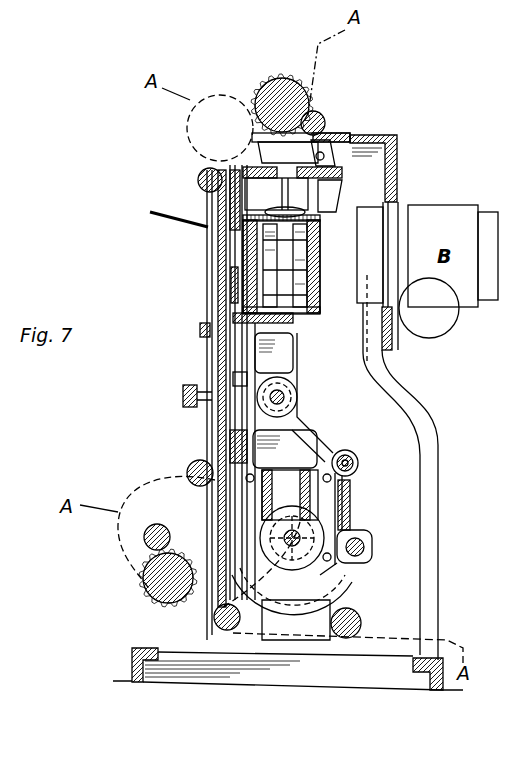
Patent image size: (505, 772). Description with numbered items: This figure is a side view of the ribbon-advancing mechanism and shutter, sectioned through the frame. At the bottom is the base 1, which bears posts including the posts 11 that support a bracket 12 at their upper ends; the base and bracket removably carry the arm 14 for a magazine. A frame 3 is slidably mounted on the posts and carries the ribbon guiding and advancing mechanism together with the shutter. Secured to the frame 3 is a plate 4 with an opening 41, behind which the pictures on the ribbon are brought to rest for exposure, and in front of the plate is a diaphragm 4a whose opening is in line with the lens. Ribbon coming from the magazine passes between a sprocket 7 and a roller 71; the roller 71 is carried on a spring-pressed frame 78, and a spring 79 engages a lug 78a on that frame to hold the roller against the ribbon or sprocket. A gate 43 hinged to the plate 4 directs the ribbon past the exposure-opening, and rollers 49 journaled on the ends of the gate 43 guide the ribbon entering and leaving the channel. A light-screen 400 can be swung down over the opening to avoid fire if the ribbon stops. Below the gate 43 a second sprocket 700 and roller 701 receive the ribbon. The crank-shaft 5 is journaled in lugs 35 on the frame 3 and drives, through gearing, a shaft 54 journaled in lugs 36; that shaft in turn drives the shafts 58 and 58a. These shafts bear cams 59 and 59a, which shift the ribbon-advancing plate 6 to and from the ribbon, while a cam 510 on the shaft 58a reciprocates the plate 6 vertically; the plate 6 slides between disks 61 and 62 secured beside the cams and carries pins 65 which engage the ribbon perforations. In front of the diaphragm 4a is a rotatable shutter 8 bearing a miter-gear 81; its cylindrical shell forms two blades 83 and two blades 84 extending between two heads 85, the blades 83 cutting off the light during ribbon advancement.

The base 1 is at (190, 674).
The frame 3 is at (257, 157).
The plate 4 is at (232, 170).
The diaphragm 4a is at (233, 287).
The crank-shaft 5 is at (372, 550).
The ribbon-advancing plate 6 is at (300, 440).
The sprocket 7 is at (280, 80).
The rotatable shutter 8 is at (388, 355).
The posts 11 is at (440, 612).
The bracket 12 is at (396, 140).
The arm 14 is at (233, 245).
The lugs 35 is at (360, 565).
The lugs 36 is at (350, 457).
The opening 41 is at (227, 277).
The gate 43 is at (205, 340).
The rollers 49 is at (198, 178).
The shaft 54 is at (358, 465).
The shaft 58 is at (297, 398).
The shaft 58a is at (290, 546).
The cam 59 is at (300, 368).
The cam 59a is at (362, 597).
The disk 61 is at (245, 412).
The disk 62 is at (343, 527).
The pins 65 is at (240, 373).
The roller 71 is at (321, 117).
The frame 78 is at (331, 134).
The lug 78a is at (355, 148).
The spring 79 is at (255, 153).
The miter-gear 81 is at (315, 200).
The blades 83 is at (322, 240).
The blades 84 is at (300, 292).
The heads 85 is at (323, 215).
The light-screen 400 is at (150, 212).
The cam 510 is at (355, 507).
The second sprocket 700 is at (150, 585).
The roller 701 is at (150, 545).